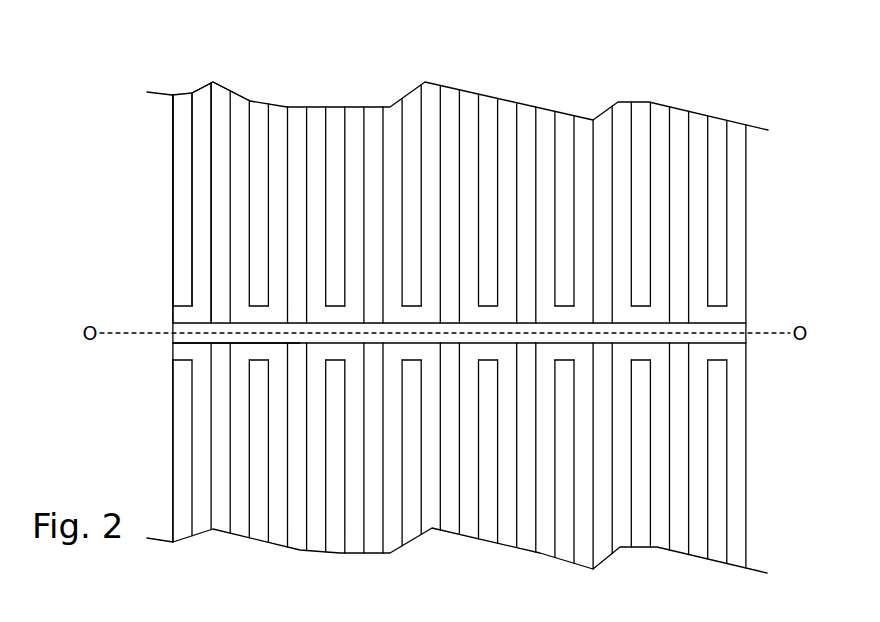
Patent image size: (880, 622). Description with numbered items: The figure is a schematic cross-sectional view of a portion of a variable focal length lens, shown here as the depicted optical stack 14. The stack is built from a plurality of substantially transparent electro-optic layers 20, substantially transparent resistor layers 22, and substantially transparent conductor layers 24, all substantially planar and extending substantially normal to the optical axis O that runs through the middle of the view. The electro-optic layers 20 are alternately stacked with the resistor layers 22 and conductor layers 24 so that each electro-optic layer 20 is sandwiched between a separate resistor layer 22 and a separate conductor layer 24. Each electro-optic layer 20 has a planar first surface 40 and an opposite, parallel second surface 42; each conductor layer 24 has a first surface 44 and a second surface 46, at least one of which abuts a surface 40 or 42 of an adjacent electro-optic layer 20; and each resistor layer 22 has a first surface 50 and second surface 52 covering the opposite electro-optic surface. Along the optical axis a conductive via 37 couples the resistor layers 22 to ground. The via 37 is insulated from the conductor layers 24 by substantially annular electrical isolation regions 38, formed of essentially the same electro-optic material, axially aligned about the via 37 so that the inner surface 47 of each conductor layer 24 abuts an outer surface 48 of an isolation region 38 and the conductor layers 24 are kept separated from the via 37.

The grid structure 14 is at (150, 48).
The electro-optic layer 20 is at (200, 92).
The resistor layer 22 is at (221, 530).
The conductor layer 24 is at (173, 543).
The conductive via 37 is at (172, 343).
The electrical isolation region 38 is at (162, 315).
The first surface 40 is at (192, 153).
The second surface 42 is at (212, 140).
The first surface 44 is at (172, 207).
The second surface 46 is at (200, 220).
The inner surface 47 is at (183, 358).
The outer surface 48 is at (262, 305).
The first surface 50 is at (210, 472).
The second surface 52 is at (215, 472).